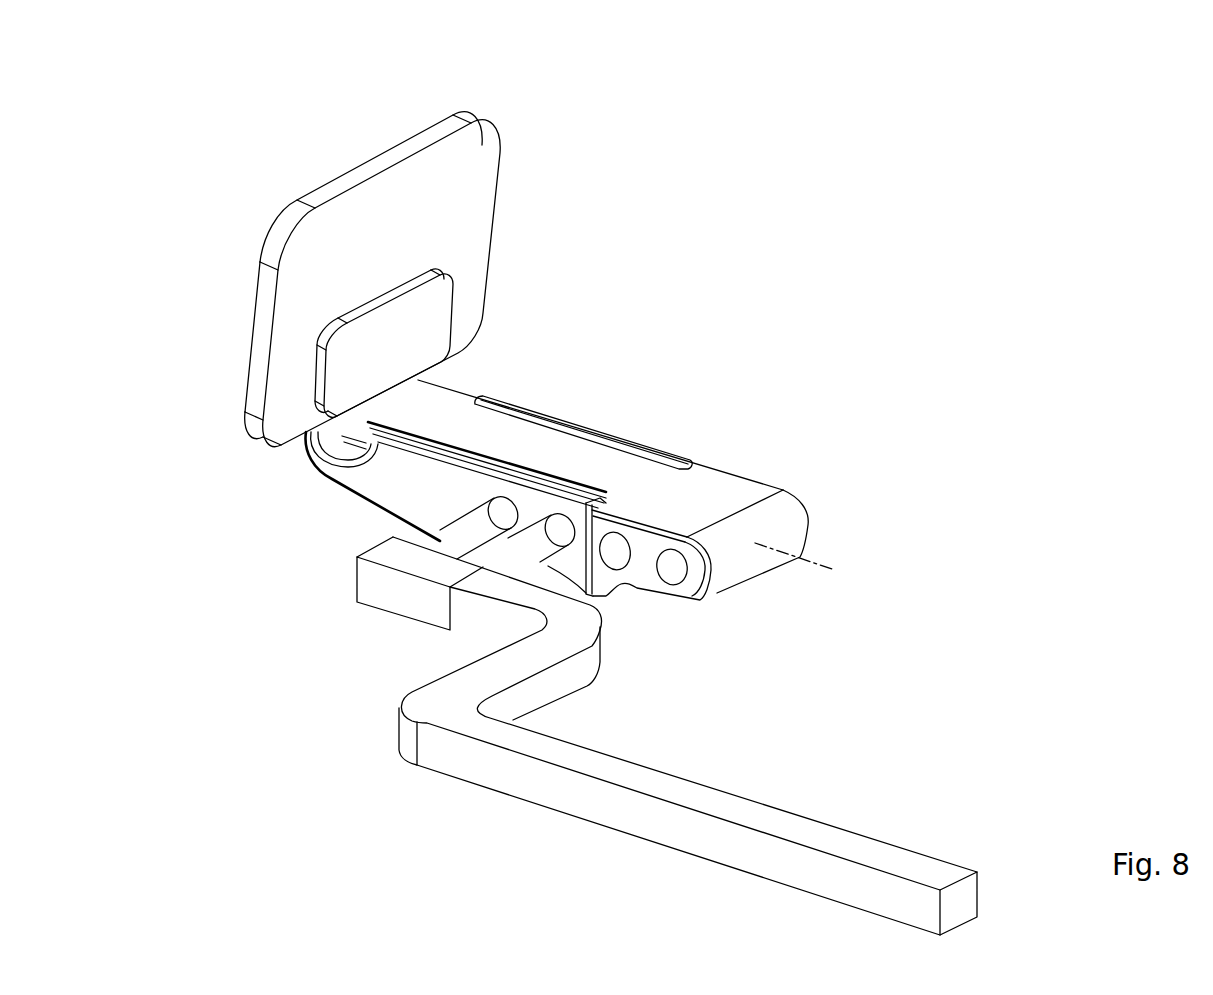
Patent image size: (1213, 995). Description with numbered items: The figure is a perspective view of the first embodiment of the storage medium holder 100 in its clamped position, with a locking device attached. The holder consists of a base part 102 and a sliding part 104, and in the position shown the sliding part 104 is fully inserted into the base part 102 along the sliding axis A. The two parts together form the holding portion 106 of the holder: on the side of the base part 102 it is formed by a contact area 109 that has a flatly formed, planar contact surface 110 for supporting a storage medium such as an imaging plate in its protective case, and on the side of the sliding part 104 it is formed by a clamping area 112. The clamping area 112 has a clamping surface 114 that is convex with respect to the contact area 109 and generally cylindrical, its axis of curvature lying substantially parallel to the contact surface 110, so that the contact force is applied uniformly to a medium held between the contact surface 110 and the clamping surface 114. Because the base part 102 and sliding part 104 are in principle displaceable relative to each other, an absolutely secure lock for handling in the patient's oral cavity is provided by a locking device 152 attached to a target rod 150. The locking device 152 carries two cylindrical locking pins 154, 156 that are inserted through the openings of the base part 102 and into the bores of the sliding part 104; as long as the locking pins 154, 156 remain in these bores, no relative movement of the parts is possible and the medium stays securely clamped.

The storage medium holder 100 is at (587, 128).
The base part 102 is at (313, 466).
The sliding part 104 is at (743, 472).
The holding portion 106 is at (250, 203).
The contact area 109 is at (258, 444).
The contact surface 110 is at (370, 200).
The clamping area 112 is at (448, 268).
The clamping surface 114 is at (405, 283).
The target rod 150 is at (813, 784).
The locking device 152 is at (404, 523).
The locking pin 154 is at (470, 531).
The locking pin 156 is at (555, 534).
The sliding axis A is at (800, 562).